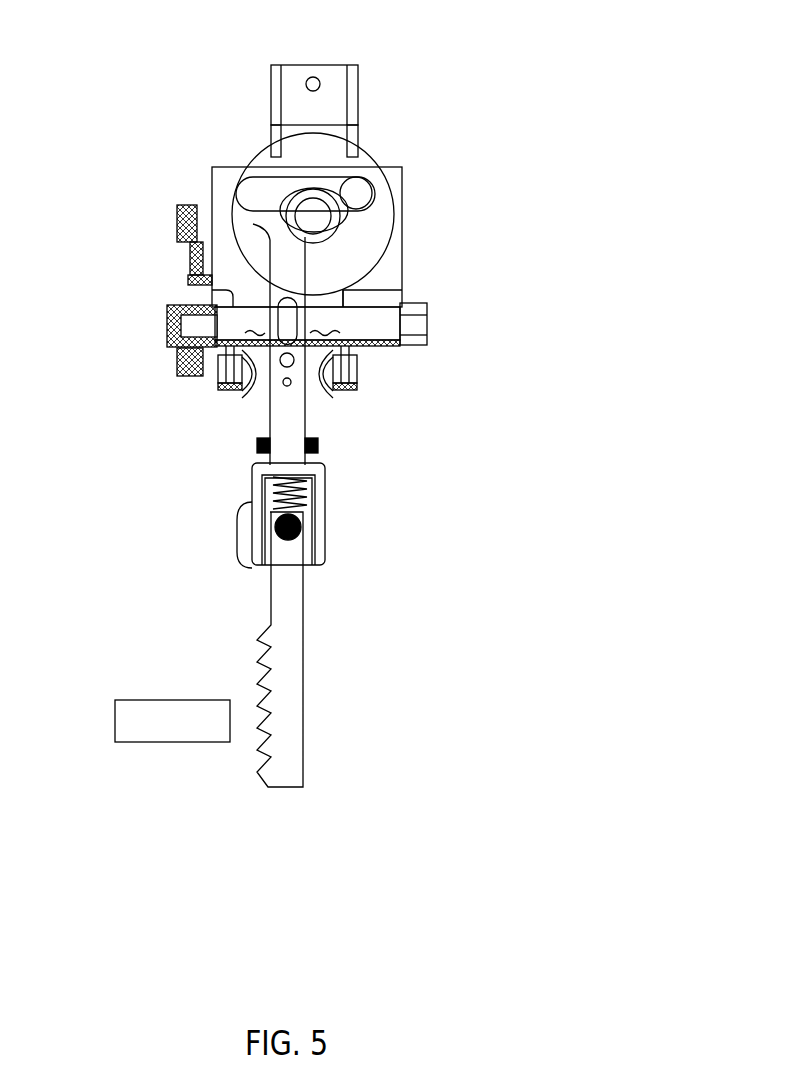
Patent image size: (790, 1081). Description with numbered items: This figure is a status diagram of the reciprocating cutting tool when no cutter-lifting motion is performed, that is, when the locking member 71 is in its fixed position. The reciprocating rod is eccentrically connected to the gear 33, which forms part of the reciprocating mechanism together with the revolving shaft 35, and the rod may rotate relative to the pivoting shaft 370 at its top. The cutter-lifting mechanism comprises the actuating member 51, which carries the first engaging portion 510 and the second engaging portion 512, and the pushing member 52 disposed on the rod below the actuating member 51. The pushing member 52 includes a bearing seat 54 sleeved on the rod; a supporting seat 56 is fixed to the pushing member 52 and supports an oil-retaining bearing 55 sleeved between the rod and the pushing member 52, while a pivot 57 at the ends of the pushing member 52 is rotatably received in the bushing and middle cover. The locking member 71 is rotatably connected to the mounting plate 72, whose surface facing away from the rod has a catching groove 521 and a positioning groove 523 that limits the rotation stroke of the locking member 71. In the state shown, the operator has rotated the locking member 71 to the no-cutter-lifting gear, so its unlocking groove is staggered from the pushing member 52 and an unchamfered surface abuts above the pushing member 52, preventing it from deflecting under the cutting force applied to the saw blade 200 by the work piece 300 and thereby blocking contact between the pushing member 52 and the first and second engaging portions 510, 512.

The pivoting shaft 370 is at (320, 82).
The actuating member 51 is at (232, 272).
The gear 33 is at (332, 153).
The revolving shaft 35 is at (360, 195).
The mounting plate 72 is at (177, 208).
The catching groove 521 is at (190, 262).
The positioning groove 523 is at (167, 318).
The first engaging portion 510 is at (253, 320).
The second engaging portion 512 is at (332, 318).
The locking member 71 is at (385, 322).
The oil-retaining bearing 55 is at (310, 392).
The pivot 57 is at (293, 360).
The bearing seat 54 is at (228, 380).
The supporting seat 56 is at (248, 395).
The pushing member 52 is at (357, 373).
The saw blade 200 is at (290, 675).
The work piece 300 is at (128, 707).